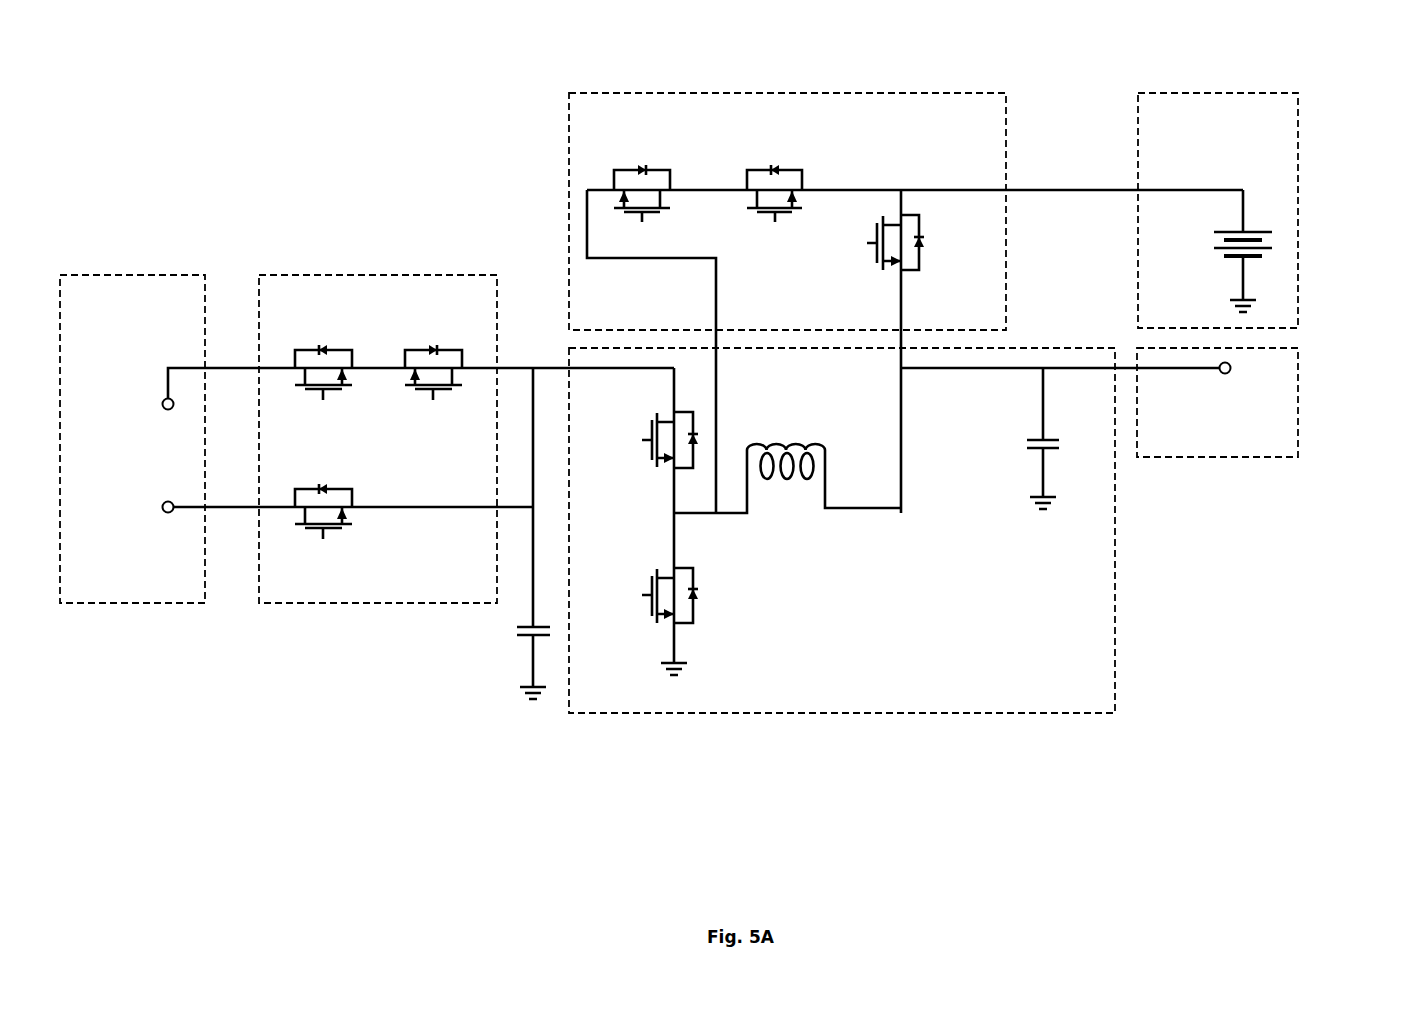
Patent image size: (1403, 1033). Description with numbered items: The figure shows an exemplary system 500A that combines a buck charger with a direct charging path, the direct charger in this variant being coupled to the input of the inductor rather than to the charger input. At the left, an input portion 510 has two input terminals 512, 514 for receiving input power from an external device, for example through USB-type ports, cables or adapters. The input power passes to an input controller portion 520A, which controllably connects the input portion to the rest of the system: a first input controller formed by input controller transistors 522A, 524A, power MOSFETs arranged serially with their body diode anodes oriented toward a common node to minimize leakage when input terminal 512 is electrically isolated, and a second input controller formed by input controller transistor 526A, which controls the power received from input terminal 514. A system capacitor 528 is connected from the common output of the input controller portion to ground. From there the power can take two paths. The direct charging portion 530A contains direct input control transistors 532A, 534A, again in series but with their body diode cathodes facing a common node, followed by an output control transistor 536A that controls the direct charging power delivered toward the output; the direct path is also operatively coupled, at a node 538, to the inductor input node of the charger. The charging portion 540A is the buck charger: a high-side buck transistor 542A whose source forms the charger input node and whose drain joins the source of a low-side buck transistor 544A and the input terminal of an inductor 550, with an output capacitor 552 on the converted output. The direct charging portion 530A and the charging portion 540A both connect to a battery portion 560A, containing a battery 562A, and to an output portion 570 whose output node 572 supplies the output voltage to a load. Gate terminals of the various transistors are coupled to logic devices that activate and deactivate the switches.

The system 500A is at (1393, 50).
The input portion 510 is at (185, 594).
The input terminal 512 is at (196, 392).
The input terminal 514 is at (196, 513).
The input controller portion 520A is at (483, 593).
The input controller transistor 522A is at (323, 353).
The input controller transistor 524A is at (433, 353).
The input controller transistor 526A is at (323, 536).
The system capacitor 528 is at (516, 533).
The direct charging portion 530A is at (630, 324).
The direct input control transistor 532A is at (642, 176).
The direct input control transistor 534A is at (774, 176).
The output control transistor 536A is at (919, 351).
The node 538 is at (587, 220).
The charging portion 540A is at (1100, 705).
The high-side buck transistor 542A is at (640, 468).
The low-side buck transistor 544A is at (640, 621).
The inductor 550 is at (787, 493).
The output capacitor 552 is at (1058, 438).
The battery portion 560A is at (1285, 123).
The battery 562A is at (1216, 251).
The output portion 570 is at (1192, 450).
The output node 572 is at (1189, 390).